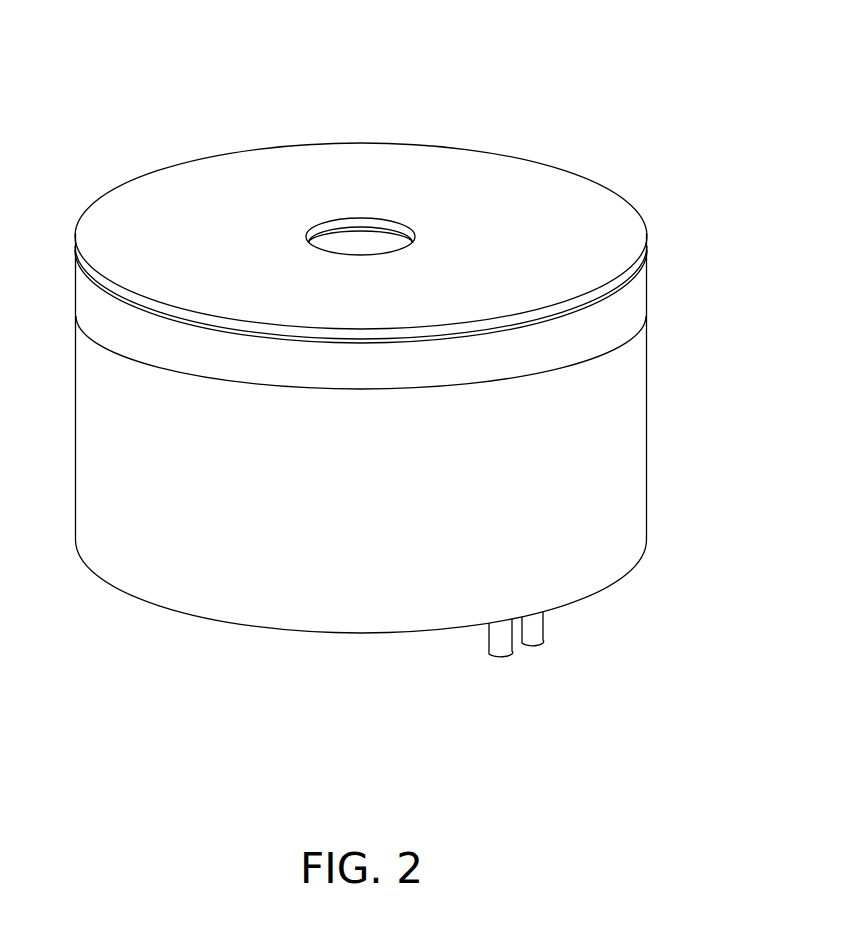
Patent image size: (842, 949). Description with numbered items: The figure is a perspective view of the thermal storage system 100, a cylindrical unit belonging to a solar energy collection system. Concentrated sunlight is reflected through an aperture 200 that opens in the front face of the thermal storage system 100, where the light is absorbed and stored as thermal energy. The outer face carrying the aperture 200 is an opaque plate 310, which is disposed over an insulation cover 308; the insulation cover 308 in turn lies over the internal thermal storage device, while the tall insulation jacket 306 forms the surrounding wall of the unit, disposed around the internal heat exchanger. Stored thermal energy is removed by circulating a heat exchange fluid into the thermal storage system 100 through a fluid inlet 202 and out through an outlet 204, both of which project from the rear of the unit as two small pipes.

The thermal storage system 100 is at (87, 88).
The aperture 200 is at (373, 204).
The fluid inlet 202 is at (534, 630).
The outlet 204 is at (499, 641).
The insulation jacket 306 is at (100, 487).
The insulation cover 308 is at (90, 312).
The opaque plate 310 is at (88, 232).